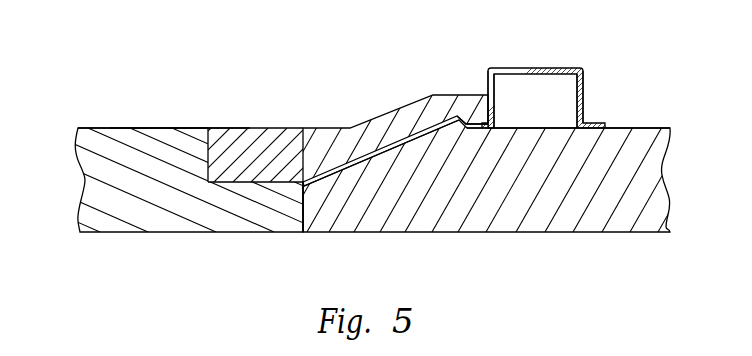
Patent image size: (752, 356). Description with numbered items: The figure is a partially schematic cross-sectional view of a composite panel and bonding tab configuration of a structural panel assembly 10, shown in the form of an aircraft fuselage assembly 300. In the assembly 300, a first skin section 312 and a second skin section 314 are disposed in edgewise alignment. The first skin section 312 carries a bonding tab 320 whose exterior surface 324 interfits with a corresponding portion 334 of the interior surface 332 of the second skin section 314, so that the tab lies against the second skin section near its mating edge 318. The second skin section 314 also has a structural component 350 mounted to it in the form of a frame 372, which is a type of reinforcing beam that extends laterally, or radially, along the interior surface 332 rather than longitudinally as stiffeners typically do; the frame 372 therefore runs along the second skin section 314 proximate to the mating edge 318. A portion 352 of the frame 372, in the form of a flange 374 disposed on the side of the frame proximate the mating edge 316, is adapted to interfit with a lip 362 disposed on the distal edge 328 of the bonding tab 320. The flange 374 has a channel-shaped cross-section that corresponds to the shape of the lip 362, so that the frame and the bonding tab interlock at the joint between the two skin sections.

The structural panel assembly 10 is at (88, 44).
The aircraft fuselage assembly 300 is at (126, 88).
The first skin section 312 is at (161, 127).
The second skin section 314 is at (632, 123).
The mating edge 316 is at (302, 208).
The mating edge 318 is at (305, 217).
The bonding tab 320 is at (318, 128).
The exterior surface 324 is at (360, 163).
The distal edge 328 is at (497, 110).
The interior surface 332 is at (662, 130).
The corresponding portion 334 is at (413, 136).
The structural component 350 is at (592, 75).
The portion of the frame 352 is at (496, 138).
The lip 362 is at (483, 128).
The frame 372 is at (580, 110).
The flange 374 is at (458, 129).